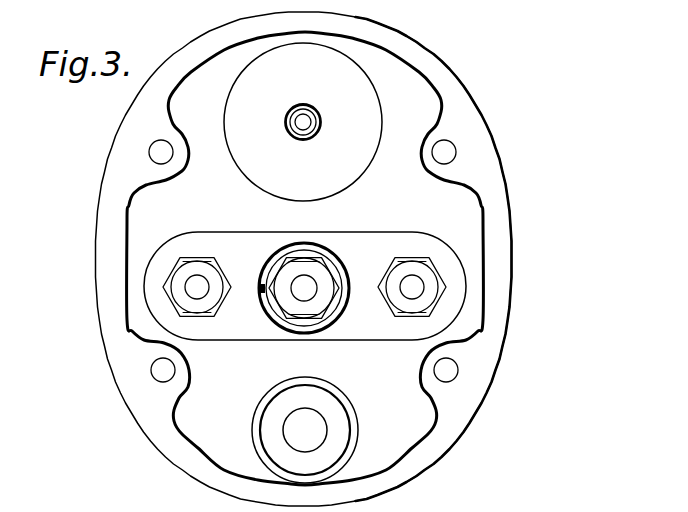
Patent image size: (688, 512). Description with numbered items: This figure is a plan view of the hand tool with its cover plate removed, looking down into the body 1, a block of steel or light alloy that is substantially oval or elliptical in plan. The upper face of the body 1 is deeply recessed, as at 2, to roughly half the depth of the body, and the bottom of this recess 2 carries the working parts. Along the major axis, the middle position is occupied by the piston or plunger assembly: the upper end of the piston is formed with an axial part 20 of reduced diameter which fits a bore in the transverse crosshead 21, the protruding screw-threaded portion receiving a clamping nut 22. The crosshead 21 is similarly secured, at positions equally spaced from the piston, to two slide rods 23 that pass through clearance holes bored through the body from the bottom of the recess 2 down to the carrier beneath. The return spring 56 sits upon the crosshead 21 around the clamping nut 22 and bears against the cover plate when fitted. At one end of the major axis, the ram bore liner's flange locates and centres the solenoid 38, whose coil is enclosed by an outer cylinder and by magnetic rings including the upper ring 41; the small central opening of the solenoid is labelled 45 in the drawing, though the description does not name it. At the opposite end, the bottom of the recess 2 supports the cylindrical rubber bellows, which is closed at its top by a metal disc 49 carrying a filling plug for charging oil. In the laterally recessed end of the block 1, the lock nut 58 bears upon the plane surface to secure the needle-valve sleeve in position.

The body 1 is at (478, 392).
The recess 2 is at (468, 233).
The axial part of reduced diameter 20 is at (294, 279).
The crosshead 21 is at (450, 277).
The clamping nut 22 is at (337, 300).
The slide rods 23 is at (190, 284).
The solenoid 38 is at (365, 72).
The upper ring 41 is at (368, 113).
The nipple opening 45 is at (311, 119).
The metal disc 49 is at (340, 432).
The spring 56 is at (345, 270).
The lock nut 58 is at (297, 411).